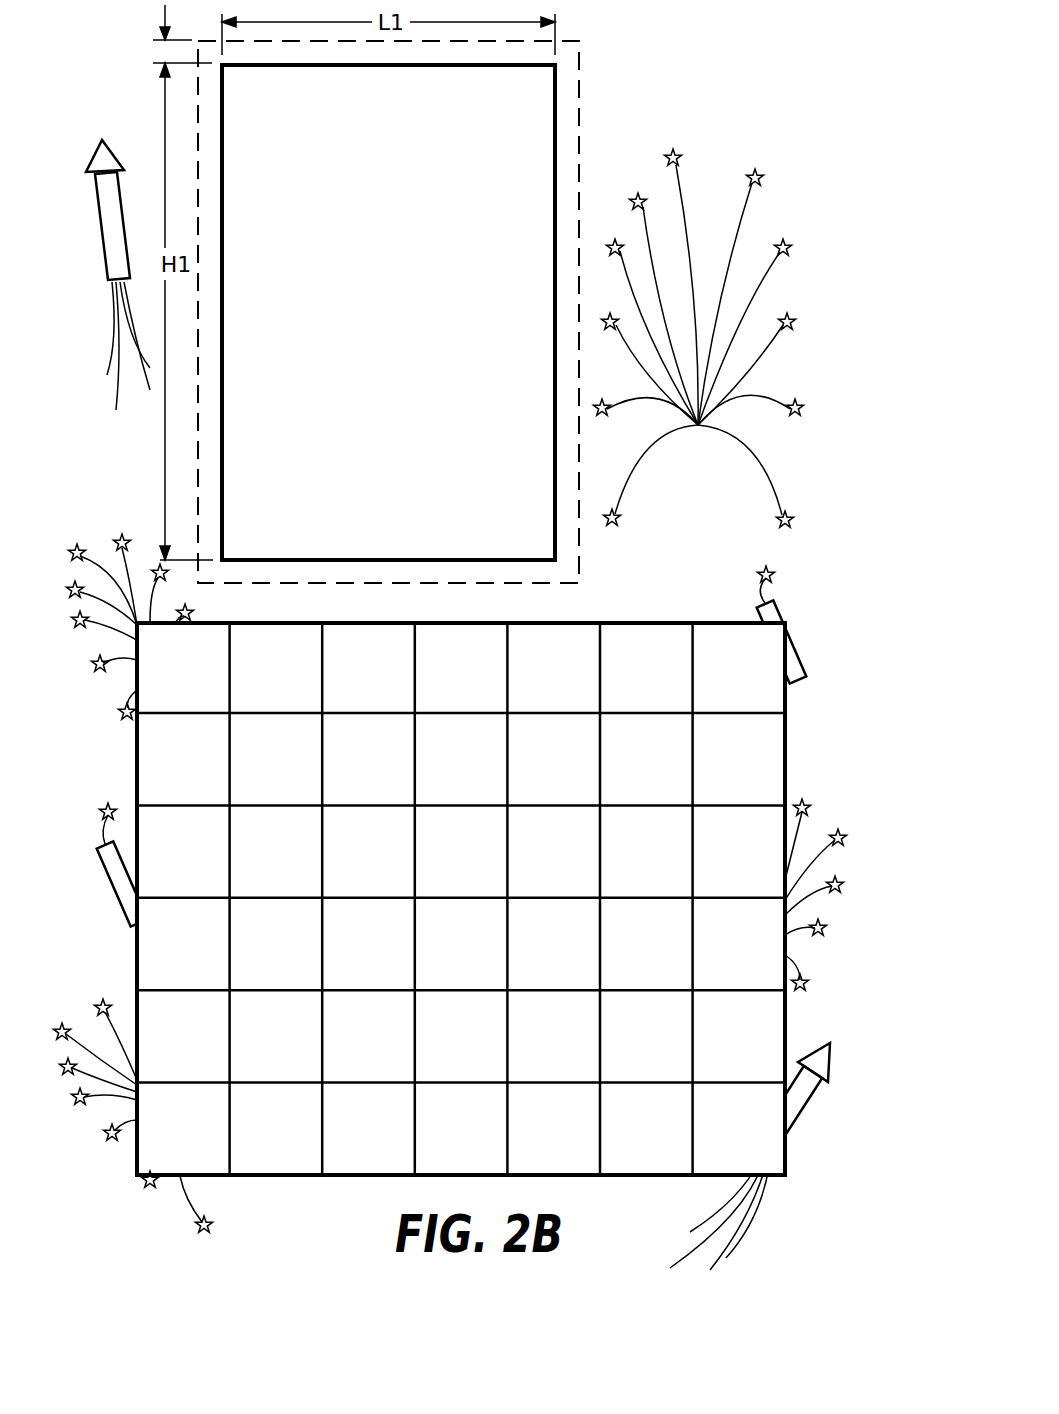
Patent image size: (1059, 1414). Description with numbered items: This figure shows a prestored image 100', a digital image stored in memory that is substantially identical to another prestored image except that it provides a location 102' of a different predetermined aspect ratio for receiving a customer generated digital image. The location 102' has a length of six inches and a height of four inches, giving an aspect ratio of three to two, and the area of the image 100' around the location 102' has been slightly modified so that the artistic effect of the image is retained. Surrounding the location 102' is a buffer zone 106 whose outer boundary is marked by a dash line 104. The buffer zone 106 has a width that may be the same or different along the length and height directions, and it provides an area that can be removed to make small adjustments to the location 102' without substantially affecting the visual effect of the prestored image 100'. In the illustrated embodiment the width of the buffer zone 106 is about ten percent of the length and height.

The prestored image 100' is at (495, 705).
The location 102' is at (466, 312).
The dash line 104 is at (580, 100).
The buffer zone 106 is at (568, 78).